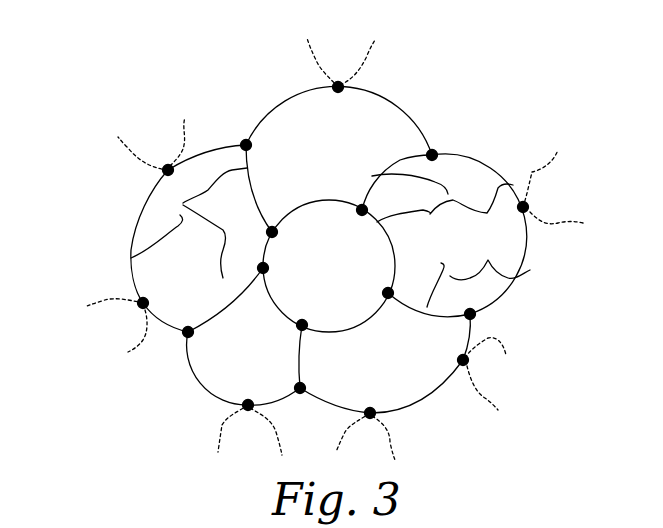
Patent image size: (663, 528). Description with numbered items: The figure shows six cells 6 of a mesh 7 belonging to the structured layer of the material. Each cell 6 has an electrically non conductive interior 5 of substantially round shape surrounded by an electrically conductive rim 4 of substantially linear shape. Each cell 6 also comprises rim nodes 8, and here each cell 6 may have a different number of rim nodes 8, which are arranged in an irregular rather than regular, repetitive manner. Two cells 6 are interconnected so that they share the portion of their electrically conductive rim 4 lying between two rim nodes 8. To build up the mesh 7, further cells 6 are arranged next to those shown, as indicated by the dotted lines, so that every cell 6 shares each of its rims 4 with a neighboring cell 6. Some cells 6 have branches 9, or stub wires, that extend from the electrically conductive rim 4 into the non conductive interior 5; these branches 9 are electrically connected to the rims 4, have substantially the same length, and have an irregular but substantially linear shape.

The electrically conductive rim 4 is at (383, 93).
The electrically non conductive interior 5 is at (324, 283).
The cell 6 is at (297, 113).
The mesh 7 is at (507, 77).
The rim node 8 is at (245, 142).
The branch 9 is at (184, 217).